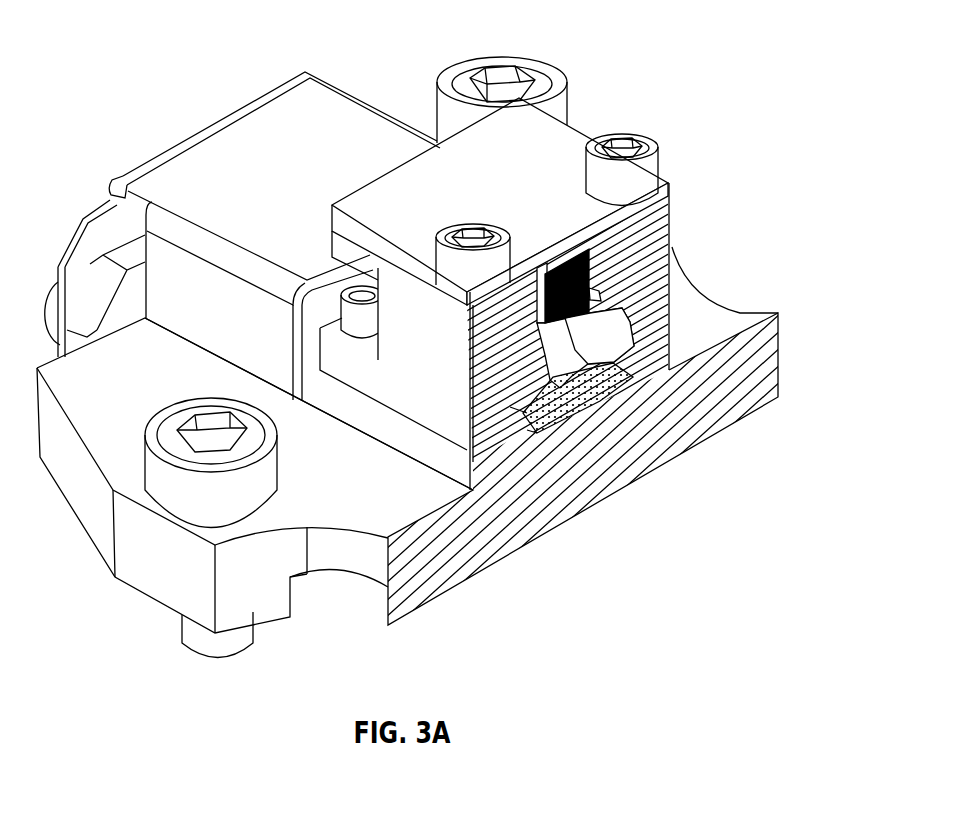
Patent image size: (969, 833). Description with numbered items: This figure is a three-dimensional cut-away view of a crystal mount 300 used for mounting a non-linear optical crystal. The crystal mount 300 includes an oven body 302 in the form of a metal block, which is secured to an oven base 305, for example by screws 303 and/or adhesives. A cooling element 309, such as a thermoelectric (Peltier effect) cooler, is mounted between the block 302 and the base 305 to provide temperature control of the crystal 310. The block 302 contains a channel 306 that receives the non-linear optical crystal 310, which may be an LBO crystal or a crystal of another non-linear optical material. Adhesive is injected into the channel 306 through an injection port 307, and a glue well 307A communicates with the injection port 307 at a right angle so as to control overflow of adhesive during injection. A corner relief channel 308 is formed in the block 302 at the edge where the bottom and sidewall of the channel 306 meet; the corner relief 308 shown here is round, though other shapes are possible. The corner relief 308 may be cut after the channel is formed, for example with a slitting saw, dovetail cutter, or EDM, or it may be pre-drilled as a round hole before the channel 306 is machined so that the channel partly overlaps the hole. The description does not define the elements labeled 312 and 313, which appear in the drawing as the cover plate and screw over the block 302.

The crystal mount 300 is at (221, 72).
The oven body 302 is at (658, 257).
The screws 303 is at (353, 325).
The oven base 305 is at (641, 449).
The channel 306 is at (538, 306).
The injection port 307 is at (563, 347).
The glue well 307A is at (598, 333).
The corner relief channel 308 is at (597, 295).
The cooling element 309 is at (560, 409).
The non-linear optical crystal 310 is at (566, 261).
The cover plate 312 is at (547, 137).
The screw 313 is at (651, 140).